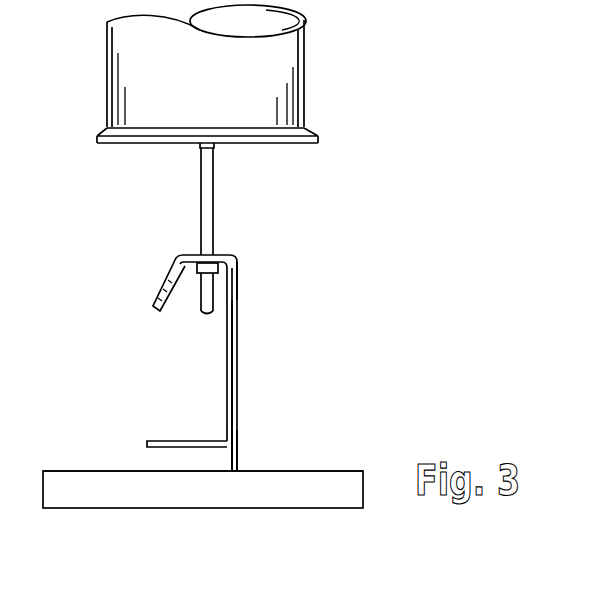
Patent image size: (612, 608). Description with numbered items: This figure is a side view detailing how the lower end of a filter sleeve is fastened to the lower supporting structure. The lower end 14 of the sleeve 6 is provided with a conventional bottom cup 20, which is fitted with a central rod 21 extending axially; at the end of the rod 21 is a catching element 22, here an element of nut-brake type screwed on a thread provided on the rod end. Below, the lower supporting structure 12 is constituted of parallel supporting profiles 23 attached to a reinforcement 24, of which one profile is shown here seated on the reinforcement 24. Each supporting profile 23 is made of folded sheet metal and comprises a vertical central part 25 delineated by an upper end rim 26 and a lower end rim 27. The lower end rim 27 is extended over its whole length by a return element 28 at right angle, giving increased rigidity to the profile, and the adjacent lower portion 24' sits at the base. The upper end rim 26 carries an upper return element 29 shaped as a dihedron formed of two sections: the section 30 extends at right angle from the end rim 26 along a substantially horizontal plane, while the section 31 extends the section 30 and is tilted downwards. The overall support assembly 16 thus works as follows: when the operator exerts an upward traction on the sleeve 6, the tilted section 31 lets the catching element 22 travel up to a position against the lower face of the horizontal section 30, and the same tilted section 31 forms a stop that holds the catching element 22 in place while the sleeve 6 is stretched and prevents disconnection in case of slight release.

The sleeve 6 is at (105, 96).
The lower end 14 is at (318, 82).
The bottom cup 20 is at (297, 146).
The central rod 21 is at (200, 183).
The catching element 22 is at (196, 280).
The section 30 is at (228, 248).
The upper return element 29 is at (188, 253).
The section 31 is at (176, 286).
The upper end rim 26 is at (246, 258).
The support 16 is at (264, 242).
The vertical central part 25 is at (238, 343).
The supporting profile 23 is at (268, 306).
The lower end rim 27 is at (238, 440).
The mounting portion 24' is at (294, 455).
The return element 28 is at (172, 440).
The lower supporting structure 12 is at (133, 490).
The reinforcement 24 is at (203, 517).